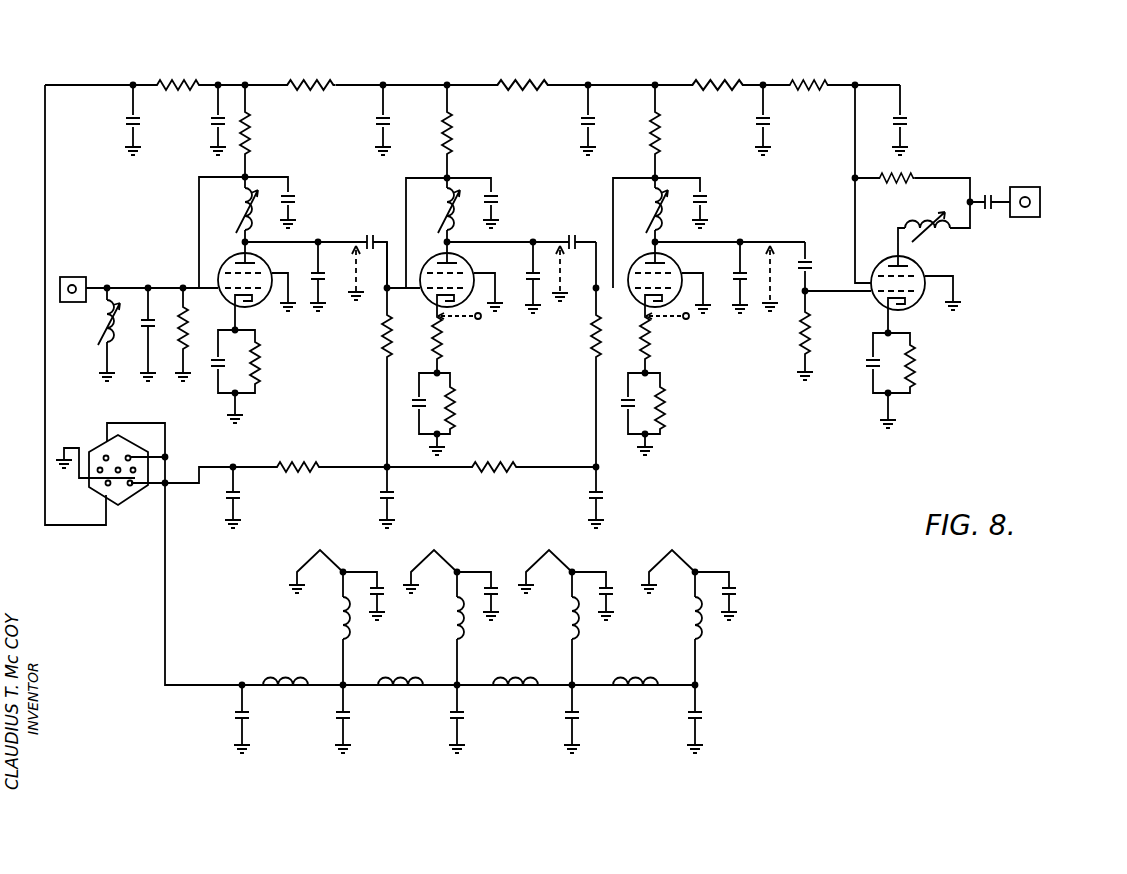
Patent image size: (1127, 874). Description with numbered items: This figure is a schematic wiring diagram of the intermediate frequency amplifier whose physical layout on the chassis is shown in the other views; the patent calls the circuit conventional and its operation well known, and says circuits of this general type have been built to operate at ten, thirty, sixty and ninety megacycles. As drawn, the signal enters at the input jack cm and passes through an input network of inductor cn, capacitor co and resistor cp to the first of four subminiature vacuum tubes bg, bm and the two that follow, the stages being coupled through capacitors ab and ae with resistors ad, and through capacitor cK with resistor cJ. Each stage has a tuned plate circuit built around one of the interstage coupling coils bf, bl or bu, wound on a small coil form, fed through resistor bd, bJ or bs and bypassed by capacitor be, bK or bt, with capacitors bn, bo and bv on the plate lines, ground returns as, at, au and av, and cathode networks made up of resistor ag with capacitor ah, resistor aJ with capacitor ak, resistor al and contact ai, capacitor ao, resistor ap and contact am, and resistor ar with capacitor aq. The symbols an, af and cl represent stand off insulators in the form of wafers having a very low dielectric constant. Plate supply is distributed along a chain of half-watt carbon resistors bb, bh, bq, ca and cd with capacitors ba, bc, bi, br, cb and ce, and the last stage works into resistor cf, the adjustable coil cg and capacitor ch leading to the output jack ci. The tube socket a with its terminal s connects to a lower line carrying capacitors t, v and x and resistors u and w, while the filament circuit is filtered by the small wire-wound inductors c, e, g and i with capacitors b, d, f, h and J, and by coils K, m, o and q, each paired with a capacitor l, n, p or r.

The tube socket a is at (106, 452).
The socket terminal s is at (130, 486).
The filter capacitor b is at (238, 718).
The filter inductor c is at (290, 678).
The filter capacitor d is at (340, 720).
The filter inductor e is at (405, 678).
The filter capacitor f is at (452, 720).
The filter inductor g is at (515, 678).
The filter capacitor h is at (567, 720).
The filter inductor i is at (635, 678).
The filter capacitor J is at (692, 720).
The choke coil K is at (338, 615).
The bypass capacitor l is at (384, 595).
The choke coil m is at (452, 615).
The bypass capacitor n is at (495, 595).
The choke coil o is at (568, 615).
The bypass capacitor p is at (610, 595).
The choke coil q is at (692, 615).
The bypass capacitor r is at (735, 595).
The bypass capacitor t is at (228, 498).
The resistor u is at (298, 475).
The bypass capacitor v is at (383, 495).
The resistor w is at (496, 475).
The bypass capacitor x is at (592, 492).
The coupling capacitor ab is at (370, 236).
The grid resistor ad is at (384, 358).
The coupling capacitor ae is at (571, 236).
The stand off insulator af is at (569, 278).
The cathode resistor ag is at (258, 368).
The cathode bypass capacitor ah is at (215, 370).
The cathode contact ai is at (468, 322).
The cathode resistor aJ is at (443, 345).
The cathode bypass capacitor ak is at (415, 405).
The cathode resistor al is at (452, 410).
The cathode contact am is at (681, 332).
The stand off insulator an is at (674, 366).
The cathode bypass capacitor ao is at (625, 405).
The cathode resistor ap is at (663, 410).
The cathode bypass capacitor aq is at (868, 370).
The cathode resistor ar is at (915, 370).
The screen ground connection as is at (284, 275).
The screen ground connection at is at (480, 282).
The screen ground connection au is at (705, 282).
The screen ground connection av is at (912, 318).
The filter capacitor ba is at (125, 122).
The dropping resistor bb is at (190, 80).
The filter capacitor bc is at (212, 122).
The plate resistor bd is at (250, 138).
The bypass capacitor be is at (298, 197).
The variable plate inductor bf is at (240, 210).
The vacuum tube bg is at (230, 262).
The dropping resistor bh is at (305, 80).
The filter capacitor bi is at (395, 120).
The plate resistor bJ is at (455, 140).
The bypass capacitor bK is at (495, 197).
The variable plate inductor bl is at (445, 212).
The vacuum tube bm is at (438, 262).
The tuning capacitor bn is at (322, 285).
The tuning capacitor bo is at (530, 282).
The dropping resistor bq is at (518, 80).
The filter capacitor br is at (583, 124).
The plate resistor bs is at (660, 140).
The bypass capacitor bt is at (705, 197).
The variable plate inductor bu is at (650, 215).
The tuning capacitor bv is at (745, 285).
The dropping resistor ca is at (710, 80).
The filter capacitor cb is at (772, 125).
The dropping resistor cd is at (808, 80).
The filter capacitor ce is at (905, 120).
The plate resistor cf is at (890, 185).
The variable output inductor cg is at (922, 234).
The output coupling capacitor ch is at (988, 212).
The output jack ci is at (1030, 187).
The grid resistor cJ is at (810, 334).
The coupling capacitor cK is at (808, 262).
The stand off insulator cl is at (771, 294).
The input jack cm is at (58, 292).
The input inductor cn is at (105, 330).
The input capacitor co is at (145, 328).
The input resistor cp is at (181, 355).